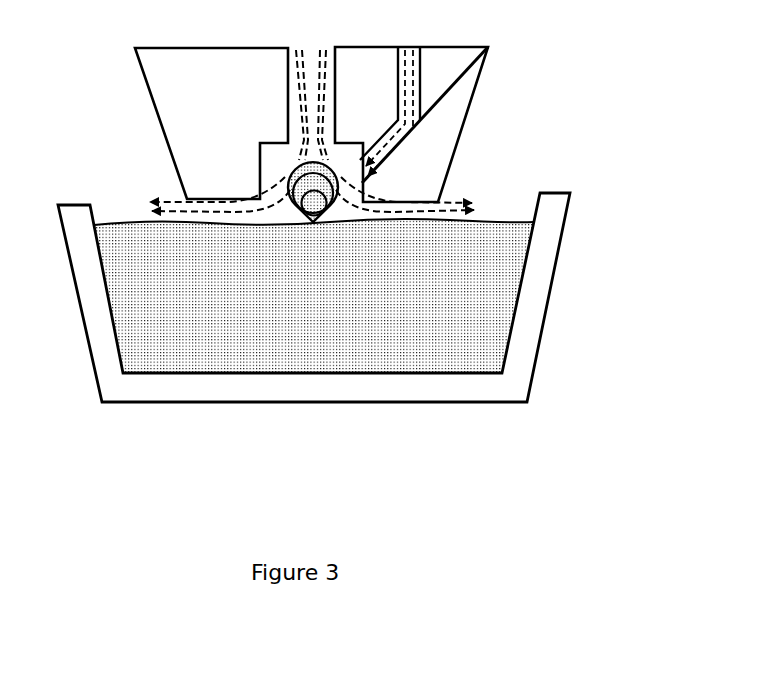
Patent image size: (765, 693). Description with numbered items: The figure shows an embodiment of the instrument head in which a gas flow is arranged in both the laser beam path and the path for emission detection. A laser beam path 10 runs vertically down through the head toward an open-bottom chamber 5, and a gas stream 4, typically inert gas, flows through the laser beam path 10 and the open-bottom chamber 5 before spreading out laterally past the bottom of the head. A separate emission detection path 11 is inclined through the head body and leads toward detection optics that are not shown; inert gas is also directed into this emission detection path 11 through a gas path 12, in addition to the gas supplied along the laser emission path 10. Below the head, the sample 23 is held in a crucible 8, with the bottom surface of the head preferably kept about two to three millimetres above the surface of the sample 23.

The laser beam path 10 is at (329, 101).
The gas path 12 is at (427, 66).
The emission detection path 11 is at (467, 81).
The open-bottom chamber 5 is at (354, 159).
The gas stream 4 is at (460, 196).
The sample 23 is at (500, 292).
The crucible 8 is at (527, 335).